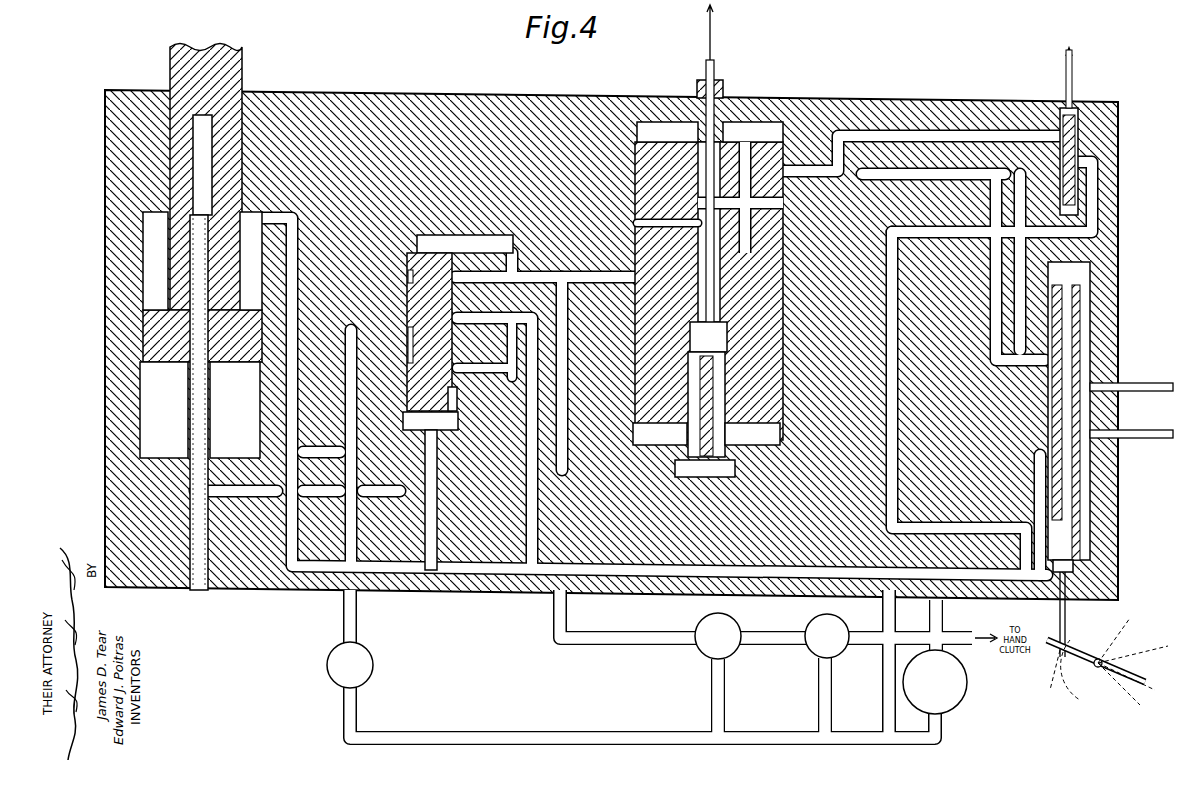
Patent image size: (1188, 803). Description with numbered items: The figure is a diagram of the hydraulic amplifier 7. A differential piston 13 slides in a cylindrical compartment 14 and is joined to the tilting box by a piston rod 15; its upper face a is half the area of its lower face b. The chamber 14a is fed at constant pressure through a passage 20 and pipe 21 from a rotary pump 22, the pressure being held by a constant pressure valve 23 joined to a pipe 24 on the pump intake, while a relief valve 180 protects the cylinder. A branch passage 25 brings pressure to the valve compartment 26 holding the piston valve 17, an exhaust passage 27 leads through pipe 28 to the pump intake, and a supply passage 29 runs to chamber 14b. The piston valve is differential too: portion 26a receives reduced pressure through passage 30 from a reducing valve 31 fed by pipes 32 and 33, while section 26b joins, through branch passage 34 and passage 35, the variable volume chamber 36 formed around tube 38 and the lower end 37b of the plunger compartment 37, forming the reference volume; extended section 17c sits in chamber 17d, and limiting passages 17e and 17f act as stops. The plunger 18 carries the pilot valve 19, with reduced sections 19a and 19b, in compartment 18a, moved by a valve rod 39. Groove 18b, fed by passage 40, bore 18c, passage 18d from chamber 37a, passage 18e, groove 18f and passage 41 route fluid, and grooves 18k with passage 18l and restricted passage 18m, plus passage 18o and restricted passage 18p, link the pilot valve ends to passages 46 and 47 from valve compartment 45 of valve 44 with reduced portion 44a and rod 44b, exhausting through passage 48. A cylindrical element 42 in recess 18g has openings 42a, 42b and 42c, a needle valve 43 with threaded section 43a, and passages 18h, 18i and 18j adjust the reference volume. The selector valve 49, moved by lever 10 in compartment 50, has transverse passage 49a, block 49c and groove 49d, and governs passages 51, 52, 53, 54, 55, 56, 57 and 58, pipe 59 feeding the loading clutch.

The hydraulic amplifier 7 is at (451, 99).
The lever 10 is at (1110, 686).
The piston 13 is at (160, 333).
The cylindrical compartment 14 is at (145, 275).
The chamber 14a is at (155, 250).
The chamber 14b is at (150, 430).
The piston rod 15 is at (204, 58).
The piston valve 17 is at (405, 309).
The extended section 17c is at (470, 236).
The chamber 17d is at (427, 236).
The limiting passage 17e is at (410, 386).
The limiting passage 17f is at (450, 400).
The plunger 18 is at (650, 331).
The valve compartment 18a is at (640, 274).
The longitudinal groove 18b is at (700, 245).
The bore 18c is at (700, 212).
The passage 18d is at (750, 140).
The passage 18e is at (740, 330).
The groove 18f is at (770, 320).
The recess 18g is at (770, 340).
The passage 18h is at (790, 300).
The passage 18i is at (650, 350).
The passage 18j is at (790, 390).
The groove 18k is at (792, 150).
The passage 18l is at (770, 195).
The restricted passage 18m is at (782, 212).
The passage 18o is at (766, 285).
The restricted passage 18p is at (776, 240).
The pilot valve 19 is at (700, 165).
The reduced section 19a is at (700, 255).
The reduced section 19b is at (700, 290).
The passage 20 is at (300, 578).
The pipe 21 is at (944, 612).
The pump 22 is at (969, 685).
The constant pressure valve 23 is at (836, 621).
The pipe 24 is at (831, 743).
The branch passage 25 is at (563, 462).
The valve compartment 26 is at (447, 349).
The portion of valve chamber 26a is at (410, 276).
The section of valve compartment 26b is at (440, 440).
The exhaust passage 27 is at (641, 590).
The pipe 28 is at (866, 688).
The supply passage 29 is at (270, 450).
The passage 30 is at (556, 598).
The reducing valve 31 is at (706, 648).
The pipe 32 is at (771, 623).
The pipe 33 is at (726, 690).
The branch passage 34 is at (426, 467).
The passage 35 is at (223, 575).
The variable volume chamber 36 is at (170, 108).
The plunger compartment 37 is at (760, 371).
The chamber 37a is at (663, 121).
The lower end of plunger compartment 37b is at (790, 450).
The tube 38 is at (190, 405).
The valve rod 39 is at (716, 62).
The passage 40 is at (620, 290).
The passage 41 is at (899, 411).
The cylindrical element 42 is at (742, 455).
The opening 42a is at (712, 350).
The opening 42b is at (690, 400).
The opening 42c is at (762, 410).
The needle valve 43 is at (782, 432).
The enlarged threaded end section 43a is at (706, 477).
The valve 44 is at (1076, 186).
The reduced central portion 44a is at (1080, 161).
The valve rod 44b is at (1073, 70).
The valve compartment 45 is at (1080, 136).
The passage 46 is at (902, 134).
The passage 47 is at (946, 170).
The exhaust passage 48 is at (940, 238).
The selector valve 49 is at (1050, 420).
The transverse passage 49a is at (1050, 395).
The block 49c is at (1046, 372).
The groove 49d is at (1105, 510).
The valve compartment 50 is at (1150, 418).
The passage 51 is at (1040, 254).
The passage 52 is at (995, 301).
The passage 53 is at (1013, 588).
The passage 54 is at (1095, 306).
The passage 55 is at (1086, 341).
The passage 56 is at (1100, 436).
The passage 57 is at (1096, 456).
The passage 58 is at (845, 512).
The pipe 59 is at (1112, 382).
The relief valve 180 is at (327, 661).
The face a is at (405, 289).
The face b is at (415, 434).